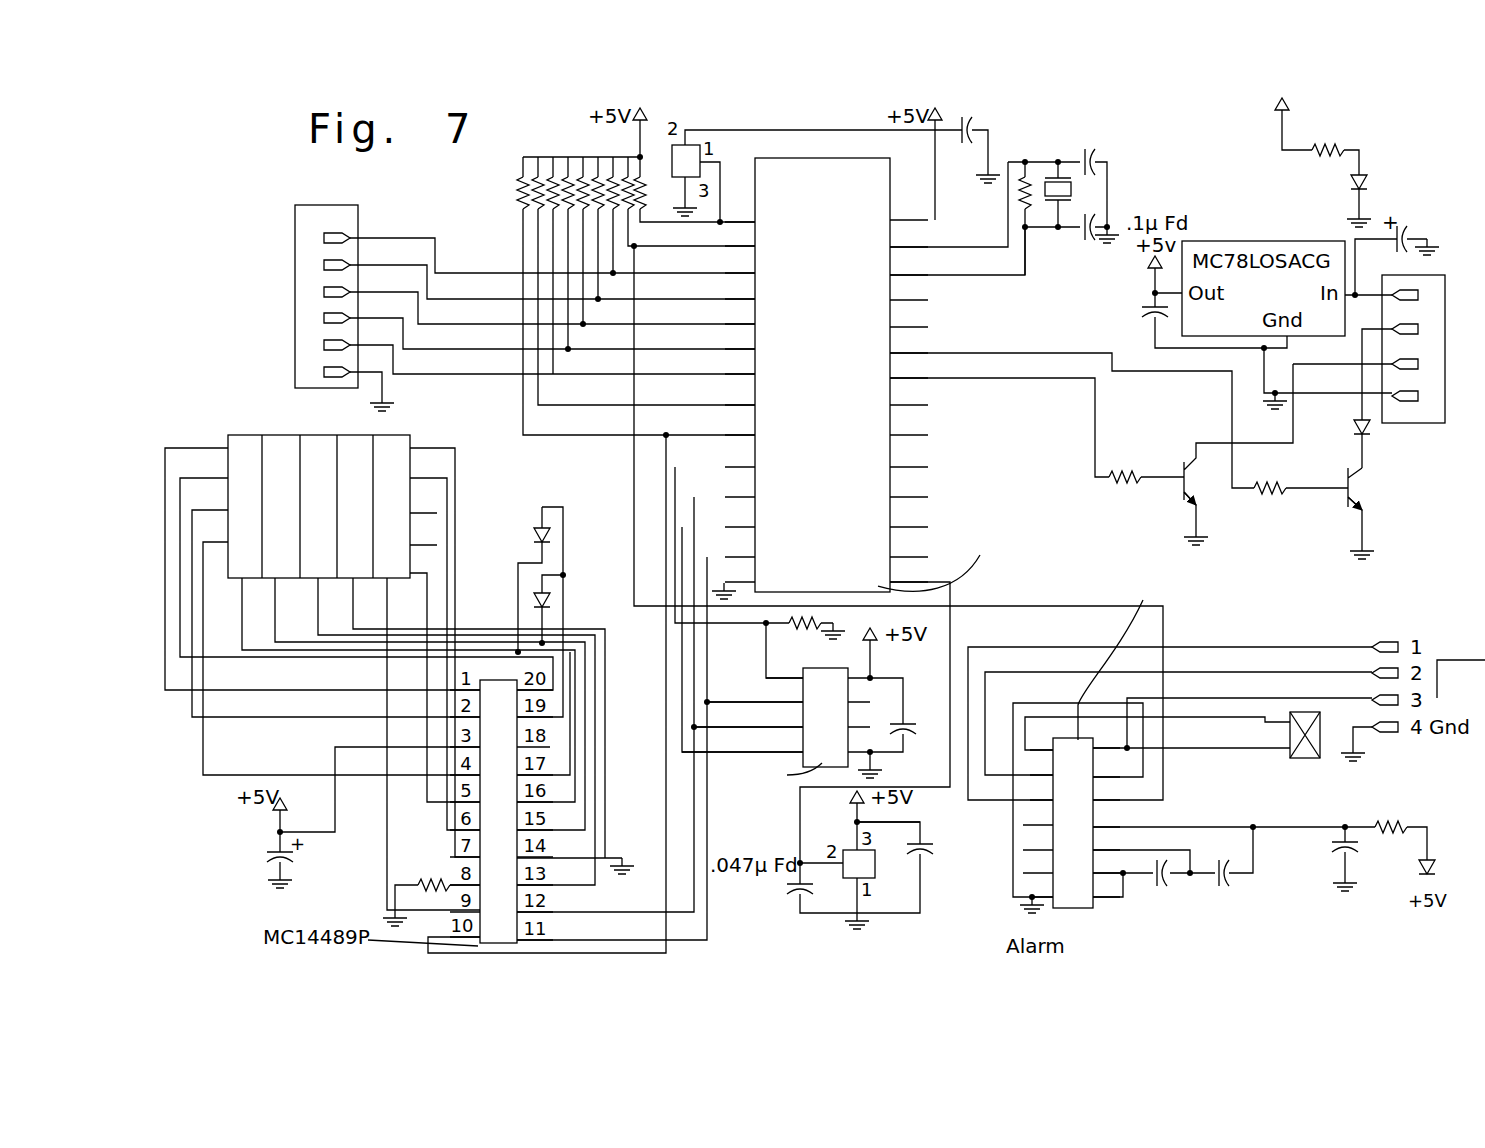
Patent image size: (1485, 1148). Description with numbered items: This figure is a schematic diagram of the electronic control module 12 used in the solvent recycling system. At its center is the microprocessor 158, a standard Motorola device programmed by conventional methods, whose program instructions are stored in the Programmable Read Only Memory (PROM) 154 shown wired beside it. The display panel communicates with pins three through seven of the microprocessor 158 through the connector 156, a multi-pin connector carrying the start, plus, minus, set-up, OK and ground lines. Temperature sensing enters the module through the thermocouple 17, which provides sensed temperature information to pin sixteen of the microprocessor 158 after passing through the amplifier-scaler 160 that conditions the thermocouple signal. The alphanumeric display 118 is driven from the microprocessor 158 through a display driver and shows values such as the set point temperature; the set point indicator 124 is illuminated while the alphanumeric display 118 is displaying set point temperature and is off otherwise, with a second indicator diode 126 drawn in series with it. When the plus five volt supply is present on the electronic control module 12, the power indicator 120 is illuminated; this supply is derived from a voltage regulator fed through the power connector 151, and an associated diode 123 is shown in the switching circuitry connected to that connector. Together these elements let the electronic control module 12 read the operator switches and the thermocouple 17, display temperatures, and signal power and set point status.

The electronic control module 12 is at (1145, 146).
The thermocouple 17 is at (1303, 757).
The alphanumeric display 118 is at (258, 402).
The power indicator 120 is at (1362, 139).
The diode 123 is at (1378, 438).
The set point indicator 124 is at (524, 520).
The diode 126 is at (578, 592).
The power connector 151 is at (1434, 276).
The Programmable Read Only Memory (PROM) 154 is at (827, 670).
The connector 156 is at (323, 212).
The microprocessor 158 is at (887, 180).
The amplifier-scaler 160 is at (1078, 897).